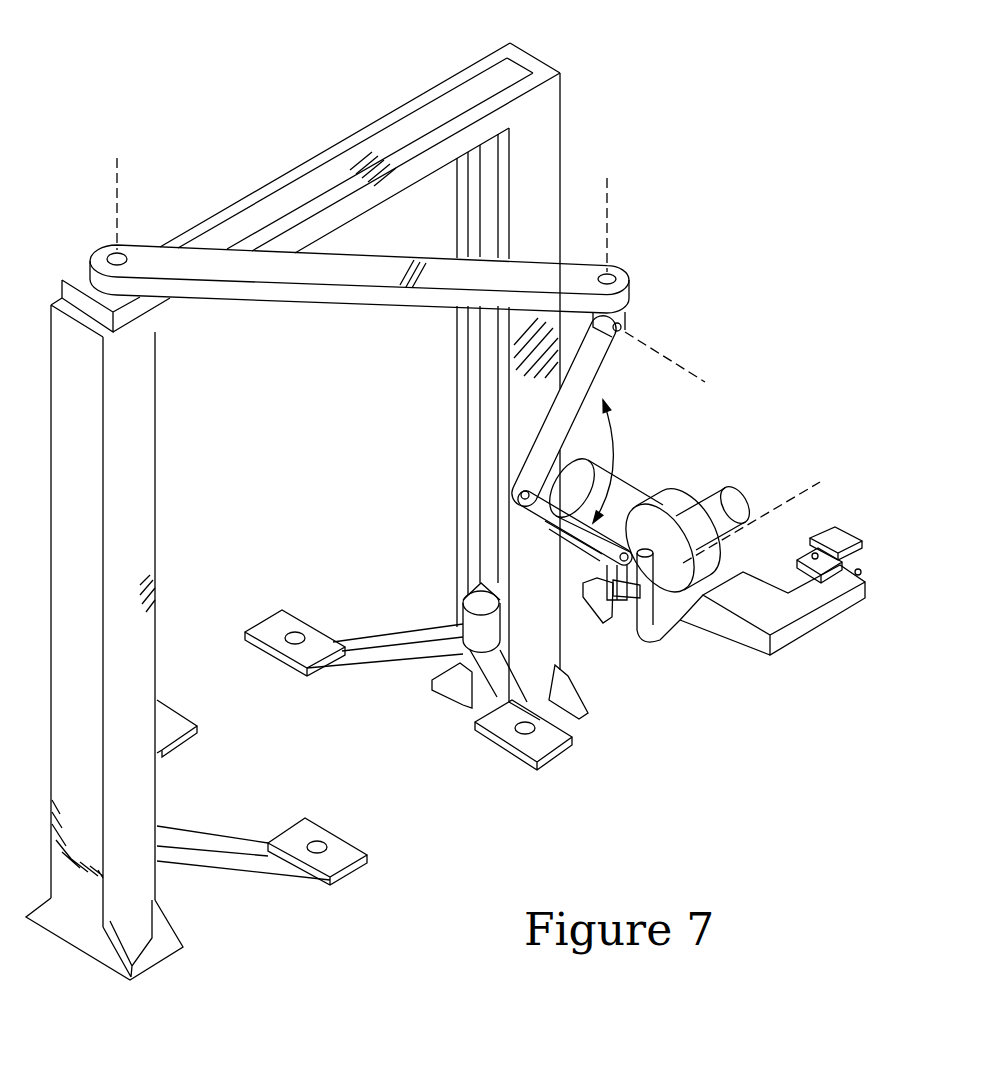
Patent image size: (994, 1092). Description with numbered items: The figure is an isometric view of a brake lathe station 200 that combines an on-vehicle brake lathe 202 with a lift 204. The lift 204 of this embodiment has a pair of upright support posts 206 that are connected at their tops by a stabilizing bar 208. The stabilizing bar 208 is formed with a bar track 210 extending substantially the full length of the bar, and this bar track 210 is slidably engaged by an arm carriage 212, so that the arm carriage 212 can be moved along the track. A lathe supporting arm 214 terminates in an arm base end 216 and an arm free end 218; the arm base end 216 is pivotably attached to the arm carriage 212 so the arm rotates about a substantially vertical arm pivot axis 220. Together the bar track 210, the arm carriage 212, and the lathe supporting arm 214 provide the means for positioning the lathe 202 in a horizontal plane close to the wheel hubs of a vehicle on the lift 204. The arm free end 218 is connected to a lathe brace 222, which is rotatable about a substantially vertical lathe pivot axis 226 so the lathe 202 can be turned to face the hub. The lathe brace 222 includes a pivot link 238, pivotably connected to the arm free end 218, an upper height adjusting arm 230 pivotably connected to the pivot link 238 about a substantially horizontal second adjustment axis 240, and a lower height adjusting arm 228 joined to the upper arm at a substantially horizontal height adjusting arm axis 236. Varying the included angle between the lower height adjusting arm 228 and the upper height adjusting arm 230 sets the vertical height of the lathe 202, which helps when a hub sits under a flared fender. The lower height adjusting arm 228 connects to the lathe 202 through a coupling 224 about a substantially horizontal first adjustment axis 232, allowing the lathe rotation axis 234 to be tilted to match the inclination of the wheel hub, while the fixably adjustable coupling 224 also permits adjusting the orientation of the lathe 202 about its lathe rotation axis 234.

The brake lathe station 200 is at (697, 107).
The on-vehicle brake lathe 202 is at (792, 653).
The lift 204 is at (223, 118).
The support posts 206 is at (130, 522).
The stabilizing bar 208 is at (338, 137).
The bar track 210 is at (470, 83).
The arm carriage 212 is at (140, 307).
The lathe supporting arm 214 is at (353, 298).
The arm base end 216 is at (102, 258).
The arm free end 218 is at (627, 277).
The arm pivot axis 220 is at (118, 183).
The lathe brace 222 is at (500, 473).
The coupling 224 is at (605, 590).
The lathe pivot axis 226 is at (608, 202).
The lower height adjusting arm 228 is at (590, 547).
The upper height adjusting arm 230 is at (558, 415).
The first adjustment axis 232 is at (673, 592).
The lathe rotation axis 234 is at (807, 490).
The height adjusting arm axis 236 is at (557, 518).
The pivot link 238 is at (622, 320).
The second adjustment axis 240 is at (687, 368).